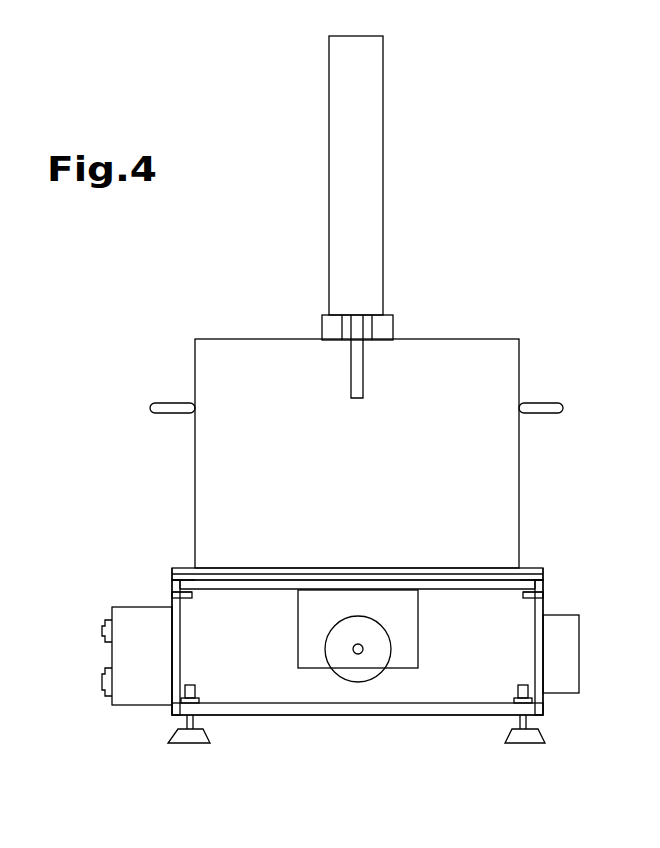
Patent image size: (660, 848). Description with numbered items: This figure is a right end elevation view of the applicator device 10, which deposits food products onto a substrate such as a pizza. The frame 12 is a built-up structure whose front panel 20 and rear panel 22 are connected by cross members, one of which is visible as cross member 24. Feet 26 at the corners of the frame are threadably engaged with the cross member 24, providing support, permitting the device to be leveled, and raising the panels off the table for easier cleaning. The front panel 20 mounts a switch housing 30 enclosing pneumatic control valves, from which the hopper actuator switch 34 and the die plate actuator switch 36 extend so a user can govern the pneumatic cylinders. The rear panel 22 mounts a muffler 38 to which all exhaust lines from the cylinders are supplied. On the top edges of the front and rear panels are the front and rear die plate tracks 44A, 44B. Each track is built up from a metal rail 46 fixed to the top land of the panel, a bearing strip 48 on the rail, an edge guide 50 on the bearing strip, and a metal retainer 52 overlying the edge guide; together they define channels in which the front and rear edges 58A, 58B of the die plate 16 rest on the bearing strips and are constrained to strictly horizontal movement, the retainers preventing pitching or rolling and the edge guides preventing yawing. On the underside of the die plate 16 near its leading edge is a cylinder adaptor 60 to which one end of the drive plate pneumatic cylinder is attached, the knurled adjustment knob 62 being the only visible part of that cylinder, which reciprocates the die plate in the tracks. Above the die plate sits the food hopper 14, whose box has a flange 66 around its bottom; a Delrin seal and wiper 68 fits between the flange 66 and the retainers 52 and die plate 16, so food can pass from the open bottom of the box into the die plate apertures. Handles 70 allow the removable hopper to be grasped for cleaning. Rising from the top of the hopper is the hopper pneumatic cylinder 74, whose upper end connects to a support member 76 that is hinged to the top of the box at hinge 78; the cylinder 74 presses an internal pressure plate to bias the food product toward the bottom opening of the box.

The applicator device 10 is at (412, 402).
The frame 12 is at (267, 718).
The food hopper 14 is at (400, 480).
The die plate 16 is at (203, 583).
The front panel 20 is at (172, 718).
The rear panel 22 is at (540, 707).
The cross member 24 is at (293, 706).
The feet 26 is at (185, 745).
The switch housing 30 is at (130, 706).
The hopper actuator switch 34 is at (104, 681).
The die plate actuator switch 36 is at (104, 631).
The muffler 38 is at (580, 652).
The front die plate track 44A is at (192, 605).
The rear die plate track 44B is at (522, 607).
The metal rail 46 is at (172, 598).
The bearing strip 48 is at (172, 596).
The edge guide 50 is at (172, 585).
The metal retainer 52 is at (173, 578).
The front edge of die plate 58A is at (180, 582).
The rear edge of die plate 58B is at (543, 572).
The cylinder adaptor 60 is at (418, 650).
The knurled adjustment knob 62 is at (361, 672).
The flange 66 is at (478, 568).
The seal and wiper 68 is at (232, 580).
The handles 70 is at (155, 405).
The hopper pneumatic cylinder 74 is at (383, 162).
The support member 76 is at (393, 315).
The hinge 78 is at (358, 325).